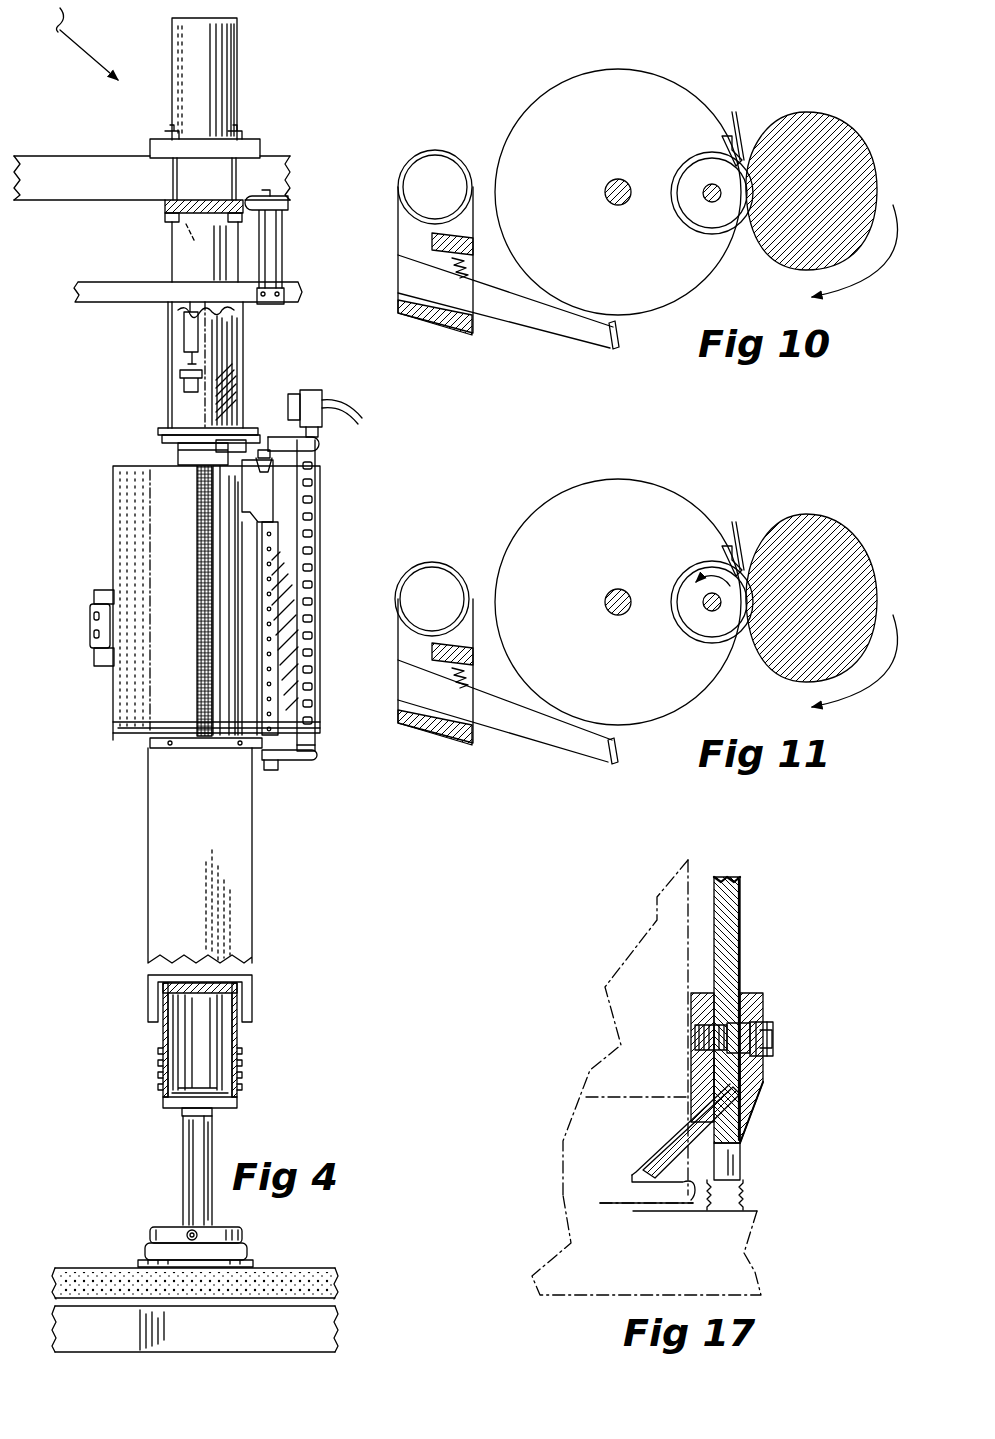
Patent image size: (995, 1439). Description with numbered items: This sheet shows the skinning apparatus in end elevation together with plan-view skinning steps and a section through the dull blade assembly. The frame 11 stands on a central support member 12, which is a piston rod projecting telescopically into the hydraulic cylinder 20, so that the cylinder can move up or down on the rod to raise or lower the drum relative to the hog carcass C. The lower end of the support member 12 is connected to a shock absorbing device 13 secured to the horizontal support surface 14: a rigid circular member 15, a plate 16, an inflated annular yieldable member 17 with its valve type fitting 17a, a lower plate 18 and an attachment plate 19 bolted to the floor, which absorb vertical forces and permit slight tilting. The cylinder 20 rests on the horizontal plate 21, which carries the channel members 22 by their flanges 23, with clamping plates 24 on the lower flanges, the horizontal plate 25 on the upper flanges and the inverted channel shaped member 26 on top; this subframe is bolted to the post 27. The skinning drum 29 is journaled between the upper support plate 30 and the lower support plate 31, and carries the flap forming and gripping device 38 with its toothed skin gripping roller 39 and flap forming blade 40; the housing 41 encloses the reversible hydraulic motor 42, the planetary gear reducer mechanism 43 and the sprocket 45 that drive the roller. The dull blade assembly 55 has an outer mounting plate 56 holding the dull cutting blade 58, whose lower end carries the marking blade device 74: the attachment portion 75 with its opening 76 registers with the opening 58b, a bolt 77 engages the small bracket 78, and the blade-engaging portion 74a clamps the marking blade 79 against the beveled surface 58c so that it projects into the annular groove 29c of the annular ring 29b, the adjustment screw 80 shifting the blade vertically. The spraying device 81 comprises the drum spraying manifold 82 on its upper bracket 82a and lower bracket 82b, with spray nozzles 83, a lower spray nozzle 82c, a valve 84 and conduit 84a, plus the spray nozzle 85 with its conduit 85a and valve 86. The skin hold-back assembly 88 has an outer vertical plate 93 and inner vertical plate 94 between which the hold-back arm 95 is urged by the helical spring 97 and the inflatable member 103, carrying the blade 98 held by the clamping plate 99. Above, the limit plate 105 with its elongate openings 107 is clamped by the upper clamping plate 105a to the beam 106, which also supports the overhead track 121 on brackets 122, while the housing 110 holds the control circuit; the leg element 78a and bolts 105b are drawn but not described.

In FIG. 4, the frame 11 is at (250, 1052).
In FIG. 4, the central support member 12 is at (214, 1146).
In FIG. 4, the shock absorbing device 13 is at (244, 1230).
In FIG. 4, the horizontal support surface 14 is at (312, 1268).
In FIG. 4, the rigid circular member 15 is at (228, 1228).
In FIG. 4, the plate 16 is at (244, 1238).
In FIG. 4, the inflated annular yieldable member 17 is at (152, 1244).
In FIG. 4, the valve type fitting 17a is at (188, 1232).
In FIG. 4, the lower plate 18 is at (248, 1254).
In FIG. 4, the attachment plate 19 is at (140, 1262).
In FIG. 4, the hydraulic cylinder 20 is at (190, 1030).
In FIG. 4, the horizontal plate 21 is at (186, 1118).
In FIG. 4, the channel members 22 is at (160, 1050).
In FIG. 4, the flange 23 is at (168, 1110).
In FIG. 4, the clamping plates 24 is at (192, 1136).
In FIG. 4, the horizontal plate 25 is at (180, 1000).
In FIG. 4, the inverted channel shaped member 26 is at (162, 974).
In FIG. 4, the post 27 is at (240, 36).
In FIG. 10, the post 27 is at (408, 158).
In FIG. 11, the post 27 is at (434, 558).
In FIG. 4, the skinning drum 29 is at (113, 548).
In FIG. 10, the skinning drum 29 is at (540, 92).
In FIG. 11, the skinning drum 29 is at (520, 530).
In FIG. 17, the skinning drum 29 is at (694, 882).
In FIG. 4, the annular ring 29b is at (116, 736).
In FIG. 17, the annular ring 29b is at (572, 1208).
In FIG. 4, the annular groove 29c is at (120, 732).
In FIG. 17, the annular groove 29c is at (670, 1185).
In FIG. 4, the upper support plate 30 is at (240, 426).
In FIG. 4, the lower support plate 31 is at (152, 746).
In FIG. 17, the lower support plate 31 is at (752, 1256).
In FIG. 4, the flap forming and gripping device 38 is at (200, 498).
In FIG. 10, the flap forming and gripping device 38 is at (688, 232).
In FIG. 11, the flap forming and gripping device 38 is at (706, 640).
In FIG. 4, the toothed skin gripping roller 39 is at (204, 556).
In FIG. 10, the toothed skin gripping roller 39 is at (698, 164).
In FIG. 11, the toothed skin gripping roller 39 is at (694, 644).
In FIG. 10, the flap forming blade 40 is at (718, 140).
In FIG. 11, the flap forming blade 40 is at (718, 548).
In FIG. 4, the housing 41 is at (244, 330).
In FIG. 4, the reversible hydraulic motor 42 is at (184, 334).
In FIG. 4, the planetary gear reducer mechanism 43 is at (180, 396).
In FIG. 4, the sprocket 45 is at (158, 444).
In FIG. 4, the dull blade assembly 55 is at (238, 728).
In FIG. 4, the outer mounting plate 56 is at (250, 504).
In FIG. 4, the dull cutting blade 58 is at (236, 630).
In FIG. 10, the dull cutting blade 58 is at (748, 112).
In FIG. 11, the dull cutting blade 58 is at (748, 520).
In FIG. 17, the dull cutting blade 58 is at (750, 928).
In FIG. 17, the opening 58b is at (722, 1072).
In FIG. 17, the beveled surface 58c is at (742, 1130).
In FIG. 17, the marking blade device 74 is at (770, 996).
In FIG. 17, the blade-engaging portion 74a is at (748, 1104).
In FIG. 17, the attachment portion 75 is at (788, 1054).
In FIG. 17, the opening 76 is at (775, 1040).
In FIG. 17, the bolt 77 is at (770, 1030).
In FIG. 17, the small bracket 78 is at (691, 1012).
In FIG. 17, the clamp plate leg 78a is at (712, 1132).
In FIG. 17, the marking blade 79 is at (676, 1153).
In FIG. 17, the adjustment screw 80 is at (744, 1189).
In FIG. 4, the spraying device 81 is at (320, 542).
In FIG. 4, the drum spraying manifold 82 is at (318, 560).
In FIG. 4, the upper bracket 82a is at (320, 444).
In FIG. 4, the lower bracket 82b is at (314, 760).
In FIG. 4, the spray nozzle 82c is at (278, 770).
In FIG. 4, the spray nozzles 83 is at (312, 660).
In FIG. 4, the valve 84 is at (318, 390).
In FIG. 4, the conduit 84a is at (350, 412).
In FIG. 4, the spray nozzle 85 is at (272, 476).
In FIG. 4, the conduit 85a is at (320, 452).
In FIG. 4, the valve 86 is at (294, 394).
In FIG. 4, the skin hold-back assembly 88 is at (98, 678).
In FIG. 10, the skin hold-back assembly 88 is at (532, 332).
In FIG. 11, the skin hold-back assembly 88 is at (518, 744).
In FIG. 10, the outer vertical plate 93 is at (430, 332).
In FIG. 11, the outer vertical plate 93 is at (430, 740).
In FIG. 10, the inner vertical plate 94 is at (432, 238).
In FIG. 11, the inner vertical plate 94 is at (432, 658).
In FIG. 10, the hold-back arm 95 is at (582, 340).
In FIG. 11, the hold-back arm 95 is at (592, 752).
In FIG. 10, the helical spring 97 is at (474, 270).
In FIG. 11, the helical spring 97 is at (474, 680).
In FIG. 4, the blade 98 is at (94, 594).
In FIG. 10, the blade 98 is at (620, 332).
In FIG. 11, the blade 98 is at (620, 746).
In FIG. 4, the clamping plate 99 is at (90, 634).
In FIG. 10, the inflatable member 103 is at (398, 292).
In FIG. 11, the inflatable member 103 is at (398, 712).
In FIG. 4, the limit plate 105 is at (165, 206).
In FIG. 4, the upper clamping plate 105a is at (260, 140).
In FIG. 4, the bolts 105b is at (182, 134).
In FIG. 4, the beam 106 is at (60, 156).
In FIG. 4, the elongate openings 107 is at (178, 240).
In FIG. 4, the housing 110 is at (146, 870).
In FIG. 4, the overhead track 121 is at (122, 282).
In FIG. 4, the brackets 122 is at (286, 236).
In FIG. 10, the hog carcass C is at (864, 142).
In FIG. 11, the hog carcass C is at (872, 548).